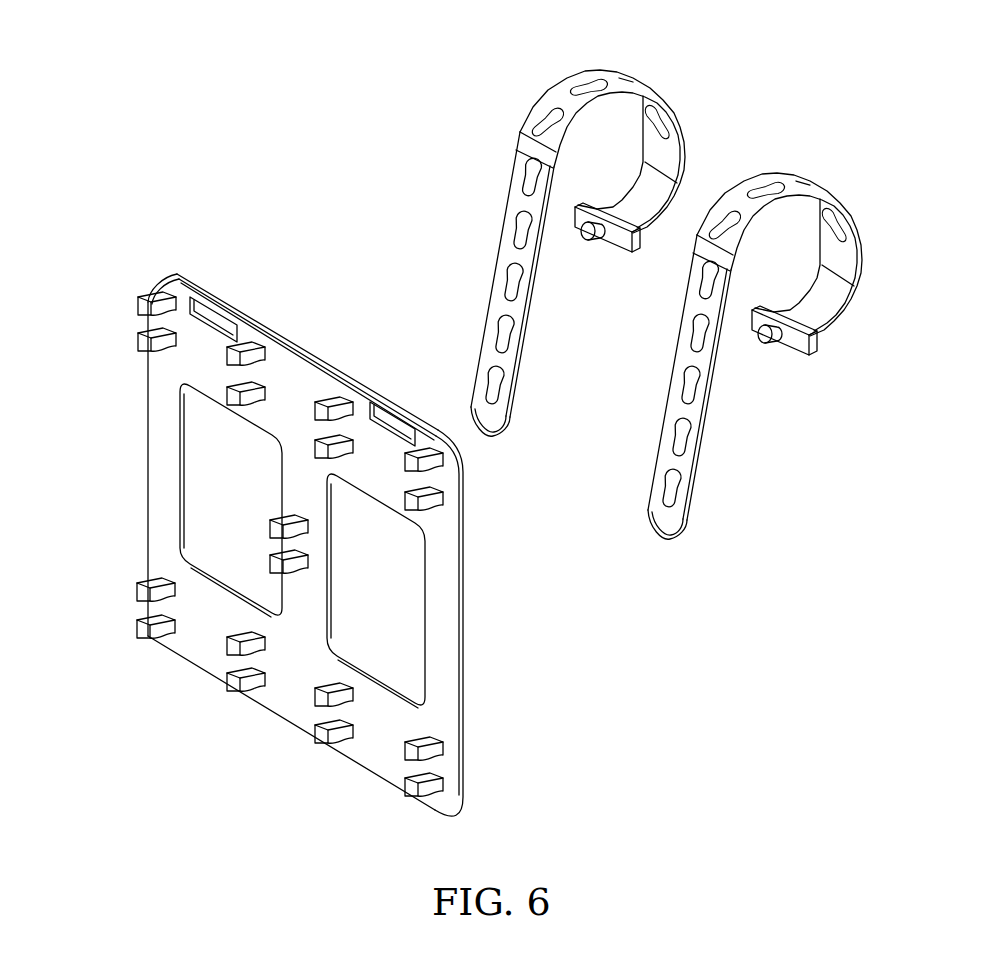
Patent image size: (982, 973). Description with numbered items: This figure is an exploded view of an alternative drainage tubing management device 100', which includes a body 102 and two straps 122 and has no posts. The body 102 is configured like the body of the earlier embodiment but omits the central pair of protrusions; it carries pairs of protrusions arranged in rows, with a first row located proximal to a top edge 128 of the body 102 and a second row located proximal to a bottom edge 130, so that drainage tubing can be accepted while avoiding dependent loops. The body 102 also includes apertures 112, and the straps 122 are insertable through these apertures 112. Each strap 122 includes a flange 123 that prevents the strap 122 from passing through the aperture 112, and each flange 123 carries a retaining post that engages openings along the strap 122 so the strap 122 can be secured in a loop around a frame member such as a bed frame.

The drainage tubing management device 100' is at (461, 422).
The body 102 is at (158, 480).
The apertures 112 is at (210, 297).
The straps 122 is at (580, 72).
The flanges 123 is at (622, 253).
The top edge 128 is at (320, 358).
The bottom edge 130 is at (277, 716).